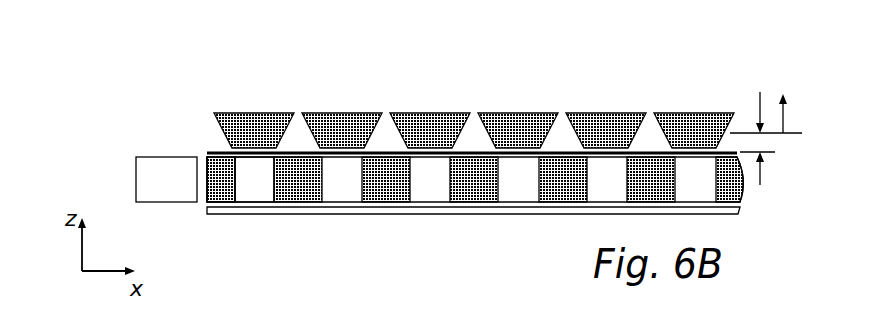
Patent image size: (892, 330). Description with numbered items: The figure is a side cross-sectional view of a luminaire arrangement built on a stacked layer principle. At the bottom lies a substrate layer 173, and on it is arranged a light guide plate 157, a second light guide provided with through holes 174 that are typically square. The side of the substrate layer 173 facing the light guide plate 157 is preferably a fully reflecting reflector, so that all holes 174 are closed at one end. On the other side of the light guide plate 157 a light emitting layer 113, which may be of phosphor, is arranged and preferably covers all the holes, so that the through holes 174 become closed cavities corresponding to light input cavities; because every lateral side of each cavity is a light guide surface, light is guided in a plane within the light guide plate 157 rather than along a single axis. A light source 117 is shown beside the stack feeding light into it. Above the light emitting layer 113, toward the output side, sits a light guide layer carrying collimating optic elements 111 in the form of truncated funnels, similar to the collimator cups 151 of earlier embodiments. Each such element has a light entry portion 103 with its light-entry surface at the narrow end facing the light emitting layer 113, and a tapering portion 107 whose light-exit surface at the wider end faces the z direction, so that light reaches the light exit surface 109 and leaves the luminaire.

The light entry portion 103 is at (771, 172).
The tapering portion 107 is at (777, 112).
The light exit surface 109 is at (416, 120).
The out-coupling structures 111 is at (454, 128).
The light emitting layer 113 is at (216, 152).
The light source 117 is at (160, 168).
The collimator cup 151 is at (253, 118).
The light guide plate 157 is at (218, 193).
The substrate layer 173 is at (390, 212).
The through holes 174 is at (252, 190).